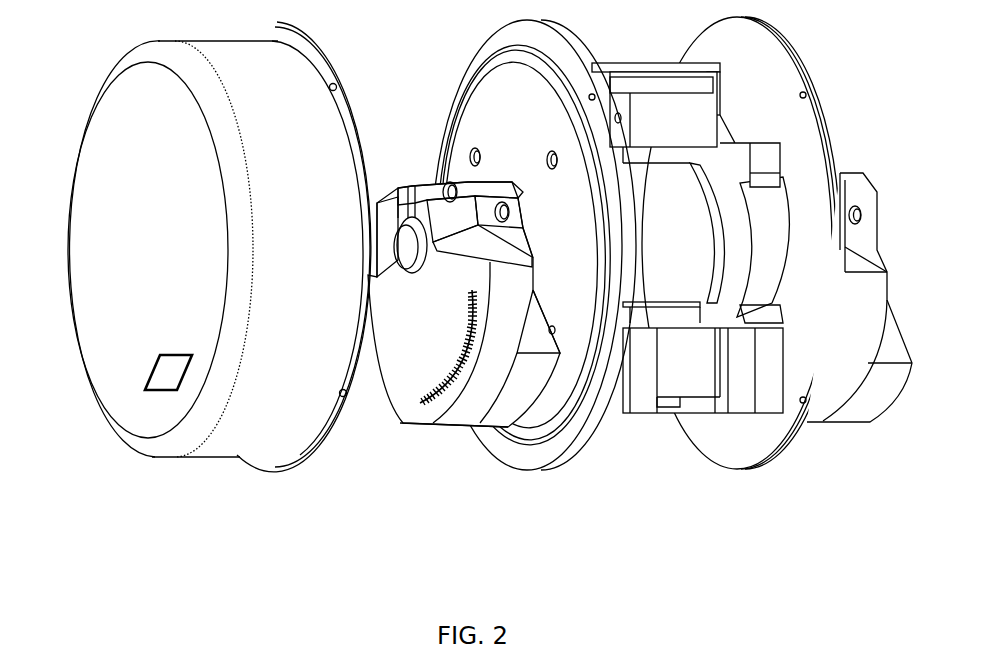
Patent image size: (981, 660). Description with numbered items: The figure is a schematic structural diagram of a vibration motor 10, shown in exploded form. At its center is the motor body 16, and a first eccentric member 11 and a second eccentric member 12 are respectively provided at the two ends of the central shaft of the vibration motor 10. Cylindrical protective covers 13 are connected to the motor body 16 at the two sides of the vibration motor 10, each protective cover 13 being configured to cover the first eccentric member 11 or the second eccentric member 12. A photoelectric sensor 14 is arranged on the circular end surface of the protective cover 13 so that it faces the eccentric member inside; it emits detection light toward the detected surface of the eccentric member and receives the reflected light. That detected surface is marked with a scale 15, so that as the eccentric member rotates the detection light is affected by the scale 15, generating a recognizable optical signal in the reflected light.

The vibration motor 10 is at (933, 520).
The first eccentric member 11 is at (465, 410).
The second eccentric member 12 is at (880, 410).
The protective cover 13 is at (63, 254).
The photoelectric sensor 14 is at (145, 390).
The scale 15 is at (412, 425).
The motor body 16 is at (648, 418).